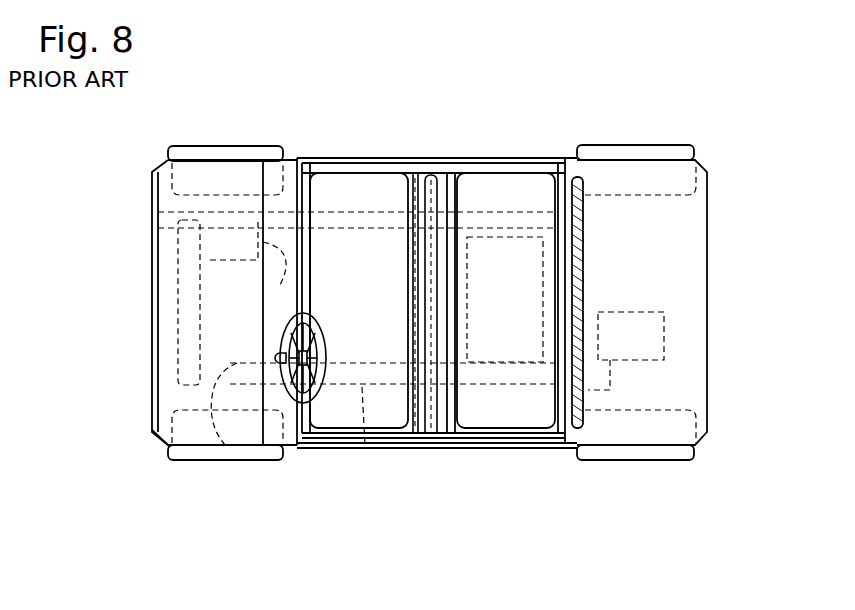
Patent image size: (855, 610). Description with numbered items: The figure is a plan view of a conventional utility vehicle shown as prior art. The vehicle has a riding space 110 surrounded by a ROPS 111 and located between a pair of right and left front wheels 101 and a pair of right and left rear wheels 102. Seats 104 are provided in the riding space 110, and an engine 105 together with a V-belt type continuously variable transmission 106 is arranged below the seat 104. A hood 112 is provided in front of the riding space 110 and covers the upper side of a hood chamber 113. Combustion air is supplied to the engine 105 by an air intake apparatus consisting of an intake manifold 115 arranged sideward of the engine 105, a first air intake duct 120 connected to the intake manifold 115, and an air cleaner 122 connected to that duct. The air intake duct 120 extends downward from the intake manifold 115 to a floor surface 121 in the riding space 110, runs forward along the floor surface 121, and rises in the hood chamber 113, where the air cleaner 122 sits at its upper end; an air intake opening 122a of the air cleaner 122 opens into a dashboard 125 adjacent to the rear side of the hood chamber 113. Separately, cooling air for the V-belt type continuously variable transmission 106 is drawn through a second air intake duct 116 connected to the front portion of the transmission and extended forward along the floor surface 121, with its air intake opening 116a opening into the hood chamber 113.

The front wheels 101 is at (218, 146).
The rear wheels 102 is at (645, 145).
The seats 104 is at (352, 195).
The engine 105 is at (497, 215).
The V-belt type continuously variable transmission 106 is at (512, 430).
The riding space 110 is at (442, 200).
The ROPS 111 is at (516, 175).
The hood 112 is at (147, 445).
The hood chamber 113 is at (137, 433).
The intake manifold 115 is at (600, 258).
The second air intake duct 116 is at (362, 447).
The air intake opening 116a is at (227, 447).
The first air intake duct 120 is at (296, 157).
The floor surface 121 is at (440, 415).
The air cleaner 122 is at (152, 212).
The air intake opening 122a is at (157, 287).
The dashboard 125 is at (262, 448).